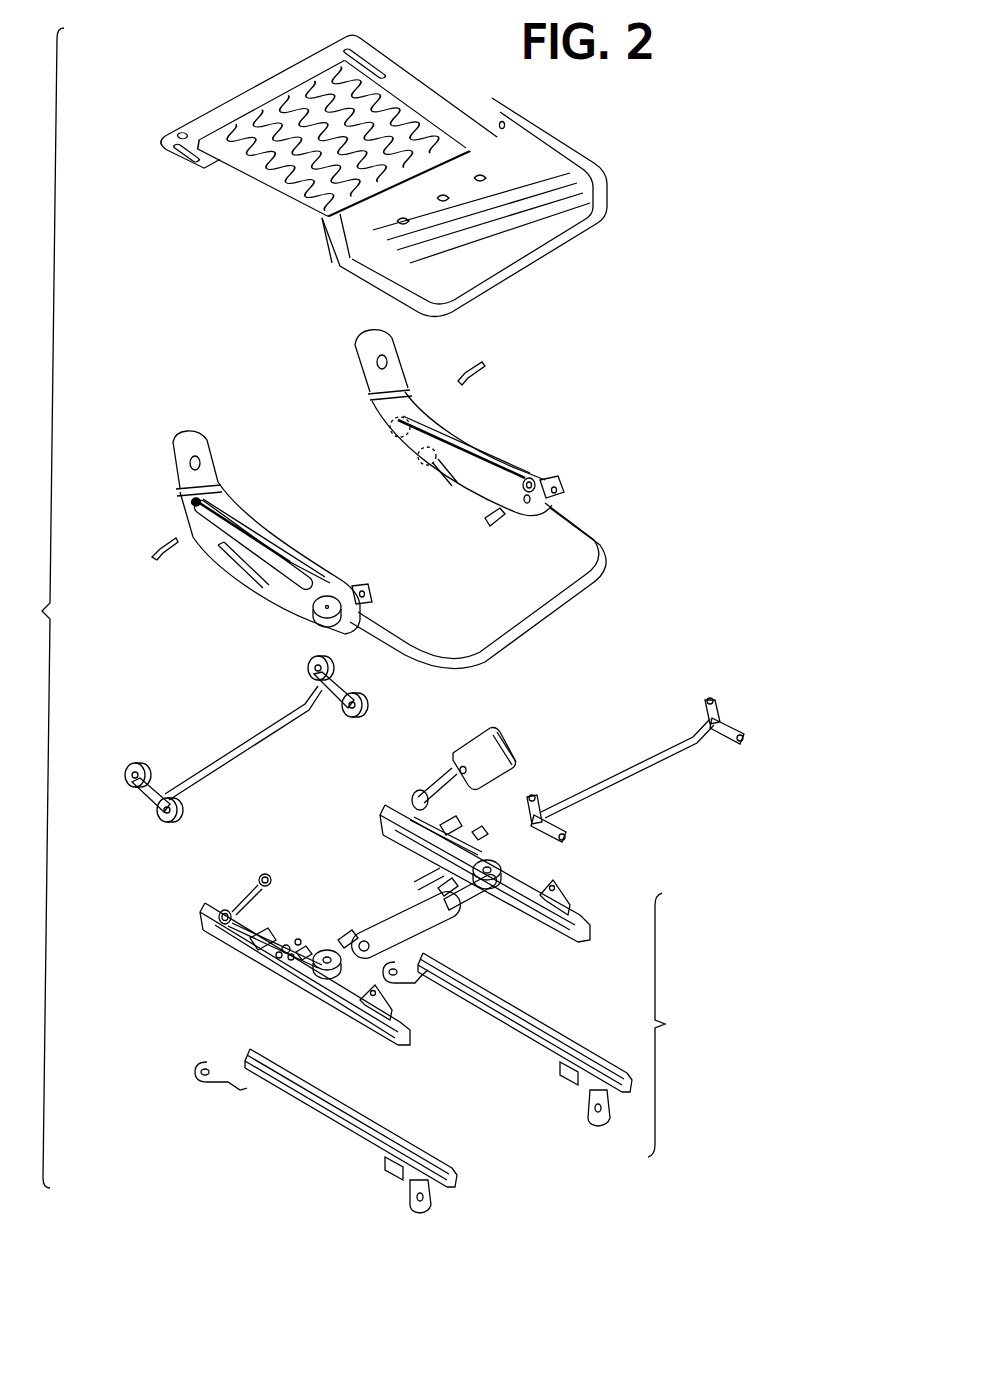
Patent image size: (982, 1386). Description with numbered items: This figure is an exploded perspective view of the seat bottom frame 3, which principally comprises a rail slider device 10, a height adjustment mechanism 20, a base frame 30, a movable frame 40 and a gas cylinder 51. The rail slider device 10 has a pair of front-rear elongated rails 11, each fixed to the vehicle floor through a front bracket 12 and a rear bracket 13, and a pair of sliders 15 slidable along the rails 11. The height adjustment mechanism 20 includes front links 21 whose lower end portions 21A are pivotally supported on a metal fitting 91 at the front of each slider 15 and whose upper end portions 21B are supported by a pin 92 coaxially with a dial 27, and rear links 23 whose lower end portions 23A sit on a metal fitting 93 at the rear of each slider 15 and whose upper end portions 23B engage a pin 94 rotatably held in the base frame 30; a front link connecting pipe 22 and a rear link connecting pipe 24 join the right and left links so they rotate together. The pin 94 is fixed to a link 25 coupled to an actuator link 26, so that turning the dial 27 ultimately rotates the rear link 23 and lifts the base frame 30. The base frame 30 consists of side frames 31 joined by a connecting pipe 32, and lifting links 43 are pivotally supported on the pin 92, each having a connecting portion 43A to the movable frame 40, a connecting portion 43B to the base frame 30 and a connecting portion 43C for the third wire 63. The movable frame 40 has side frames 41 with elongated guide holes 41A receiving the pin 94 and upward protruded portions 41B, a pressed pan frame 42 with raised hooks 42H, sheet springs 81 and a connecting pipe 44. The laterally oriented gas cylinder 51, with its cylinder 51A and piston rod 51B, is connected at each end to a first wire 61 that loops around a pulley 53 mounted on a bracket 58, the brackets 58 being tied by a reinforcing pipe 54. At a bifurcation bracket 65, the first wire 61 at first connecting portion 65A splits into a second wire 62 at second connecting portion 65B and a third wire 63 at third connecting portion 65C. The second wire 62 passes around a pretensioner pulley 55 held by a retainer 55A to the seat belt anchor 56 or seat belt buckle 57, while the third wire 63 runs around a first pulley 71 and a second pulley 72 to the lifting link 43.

The bottom frame 3 is at (42, 608).
The rail slider device 10 is at (441, 1056).
The rail 11 is at (562, 1038).
The front bracket 12 is at (596, 1127).
The rear bracket 13 is at (411, 988).
The slider 15 is at (585, 938).
The height adjustment mechanism 20 is at (675, 818).
The front link 21 is at (724, 718).
The lower end portion of the front link 21A is at (746, 744).
The upper end portion of the front link 21B is at (707, 696).
The front link connecting pipe 22 is at (640, 766).
The rear link 23 is at (342, 690).
The lower end portion of the rear link 23A is at (354, 722).
The upper end portion of the rear link 23B is at (312, 680).
The rear link connecting pipe 24 is at (260, 752).
The link 25 is at (193, 500).
The actuator link 26 is at (246, 566).
The dial 27 is at (316, 616).
The base frame 30 is at (593, 440).
The side frame 31 is at (492, 458).
The connecting pipe 32 is at (560, 614).
The movable frame 40 is at (604, 127).
The side frame 41 is at (430, 82).
The guide hole 41A is at (372, 56).
The protruded portion 41B is at (350, 32).
The pan frame 42 is at (602, 222).
The hook 42H is at (486, 180).
The lifting link 43 is at (553, 478).
The connecting portion 43A is at (563, 490).
The connecting portion 43B is at (528, 503).
The connecting portion 43C is at (529, 477).
The connecting pipe 44 is at (255, 95).
The gas cylinder 51 is at (437, 925).
The cylinder 51A is at (470, 918).
The piston rod 51B is at (458, 905).
The pulley 53 is at (491, 858).
The reinforcing pipe 54 is at (426, 890).
The pretensioner pulley 55 is at (408, 803).
The retainer 55A is at (421, 788).
The seat belt anchor 56 is at (265, 872).
The seat belt buckle 57 is at (474, 746).
The bracket 58 is at (440, 884).
The first wire 61 is at (479, 828).
The second wire 62 is at (448, 820).
The third wire 63 is at (448, 436).
The bifurcation bracket 65 is at (289, 963).
The first connecting portion 65A is at (292, 974).
The second connecting portion 65B is at (280, 957).
The third connecting portion 65C is at (297, 938).
The first pulley 71 is at (426, 470).
The second pulley 72 is at (392, 432).
The sheet spring 81 is at (400, 108).
The metal fitting 91 is at (562, 899).
The pin 92 is at (493, 525).
The metal fitting 93 is at (400, 828).
The pin 94 is at (485, 368).